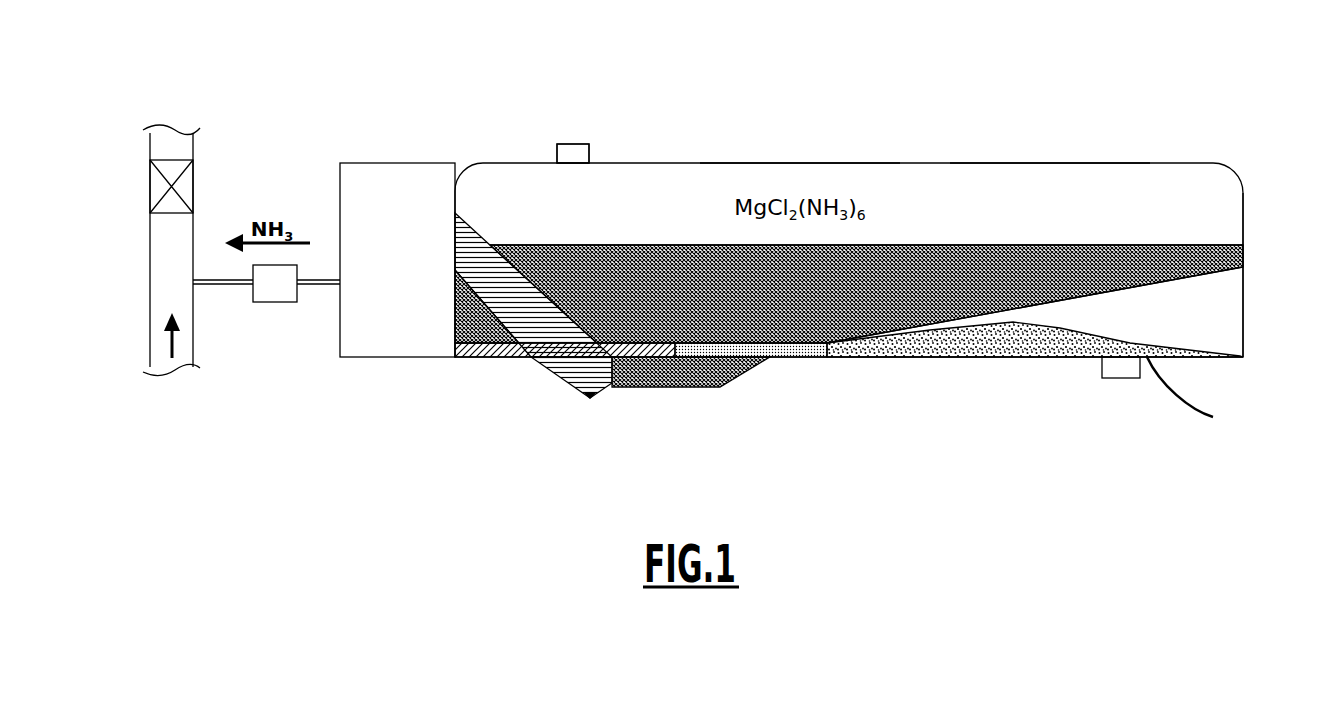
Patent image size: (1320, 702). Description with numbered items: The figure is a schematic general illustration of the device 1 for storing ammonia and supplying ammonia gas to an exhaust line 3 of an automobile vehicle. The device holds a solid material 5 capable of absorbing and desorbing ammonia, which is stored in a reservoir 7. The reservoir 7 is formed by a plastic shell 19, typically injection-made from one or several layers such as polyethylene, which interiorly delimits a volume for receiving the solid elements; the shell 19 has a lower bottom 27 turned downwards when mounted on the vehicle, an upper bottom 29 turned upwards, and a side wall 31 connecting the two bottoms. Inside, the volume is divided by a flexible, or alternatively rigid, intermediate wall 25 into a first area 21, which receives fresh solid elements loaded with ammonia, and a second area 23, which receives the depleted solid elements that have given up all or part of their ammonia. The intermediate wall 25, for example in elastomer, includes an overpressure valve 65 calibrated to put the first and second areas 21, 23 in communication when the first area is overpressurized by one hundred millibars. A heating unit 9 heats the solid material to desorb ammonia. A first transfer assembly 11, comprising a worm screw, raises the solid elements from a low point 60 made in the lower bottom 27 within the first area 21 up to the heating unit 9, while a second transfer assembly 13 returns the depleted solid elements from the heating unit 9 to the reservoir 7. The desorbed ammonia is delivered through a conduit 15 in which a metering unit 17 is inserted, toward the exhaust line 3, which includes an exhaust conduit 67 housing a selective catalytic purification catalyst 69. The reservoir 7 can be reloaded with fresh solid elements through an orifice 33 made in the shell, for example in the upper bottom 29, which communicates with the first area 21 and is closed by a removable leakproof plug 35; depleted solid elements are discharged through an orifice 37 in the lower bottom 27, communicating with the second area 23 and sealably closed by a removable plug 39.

The device for storing and supplying ammonia 1 is at (849, 196).
The exhaust line 3 is at (165, 236).
The solid material 5 is at (1087, 247).
The reservoir 7 is at (1043, 163).
The heating unit 9 is at (395, 163).
The first transfer assembly 11 is at (590, 383).
The second transfer assembly 13 is at (490, 350).
The conduit 15 is at (318, 286).
The metering unit 17 is at (270, 303).
The shell 19 is at (893, 163).
The first area 21 is at (1018, 210).
The second area 23 is at (1190, 308).
The intermediate wall 25 is at (1243, 267).
The lower bottom 27 is at (967, 357).
The upper bottom 29 is at (793, 163).
The side wall 31 is at (1243, 218).
The orifice for reloading 33 is at (588, 165).
The removable leakproof plug 35 is at (560, 144).
The orifice for discharging 37 is at (1199, 398).
The removable plug 39 is at (1120, 378).
The low point 60 is at (660, 387).
The overpressure valve 65 is at (1147, 247).
The exhaust conduit 67 is at (148, 232).
The selective catalytic purification catalyst 69 is at (157, 185).